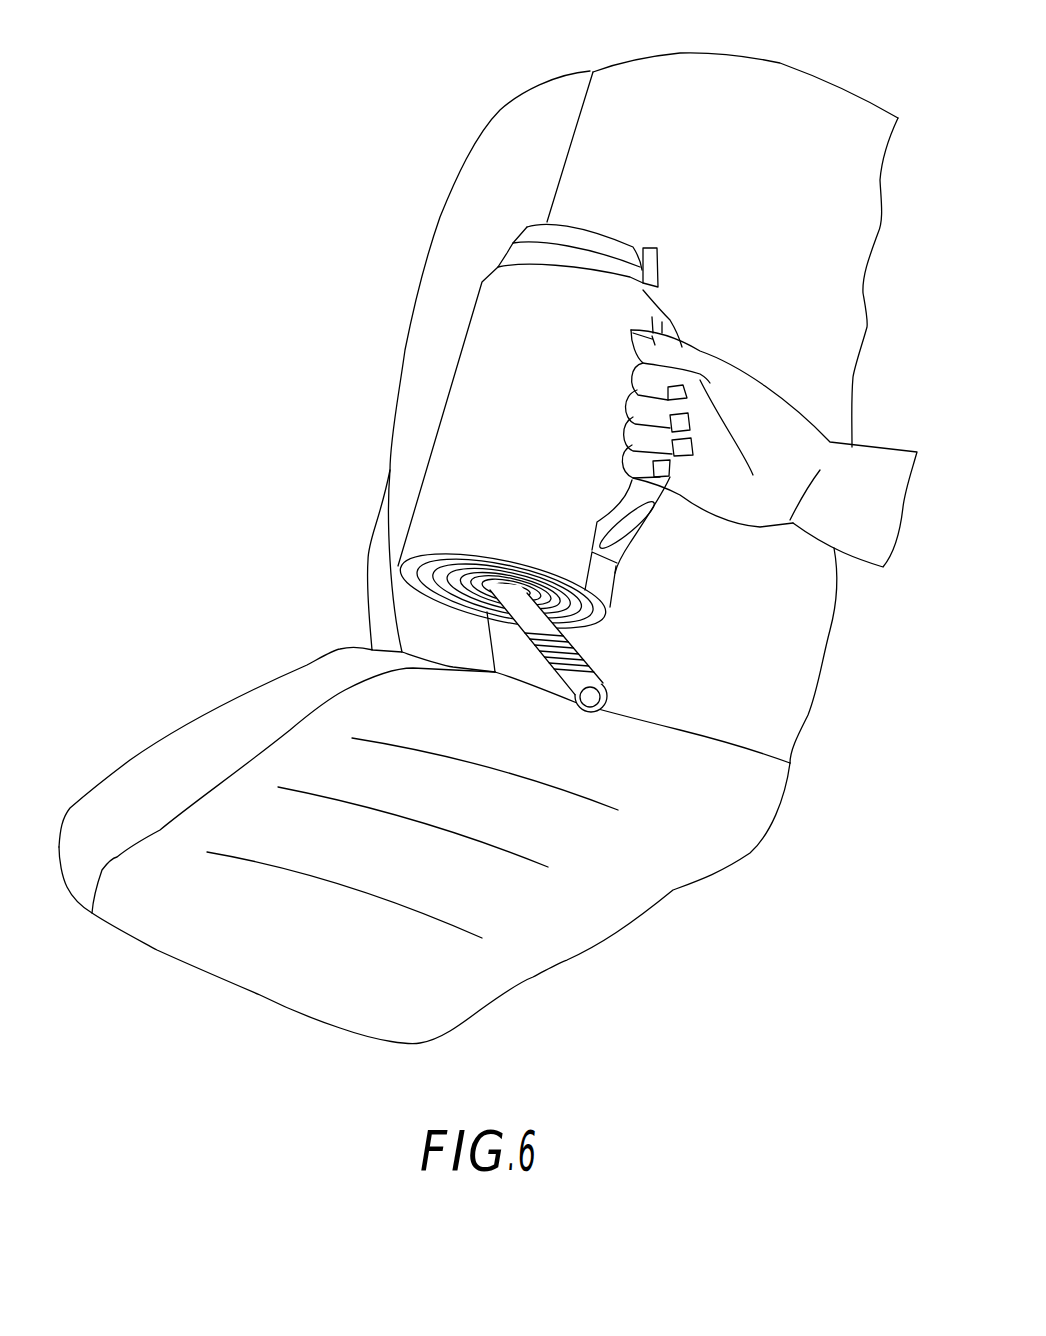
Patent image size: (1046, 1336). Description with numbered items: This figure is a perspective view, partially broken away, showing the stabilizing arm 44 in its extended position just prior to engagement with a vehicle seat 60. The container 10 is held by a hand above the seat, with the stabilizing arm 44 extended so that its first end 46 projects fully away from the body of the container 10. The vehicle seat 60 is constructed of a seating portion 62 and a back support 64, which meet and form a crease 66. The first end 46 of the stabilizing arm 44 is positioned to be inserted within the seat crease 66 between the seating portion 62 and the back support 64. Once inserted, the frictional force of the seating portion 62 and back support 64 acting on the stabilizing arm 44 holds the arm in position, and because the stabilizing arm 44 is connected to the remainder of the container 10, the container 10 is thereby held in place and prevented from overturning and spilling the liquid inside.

The container 10 is at (690, 296).
The stabilizing arm 44 is at (586, 650).
The first end 46 is at (610, 703).
The vehicle seat 60 is at (757, 58).
The seating portion 62 is at (260, 745).
The back support 64 is at (421, 323).
The crease 66 is at (736, 738).